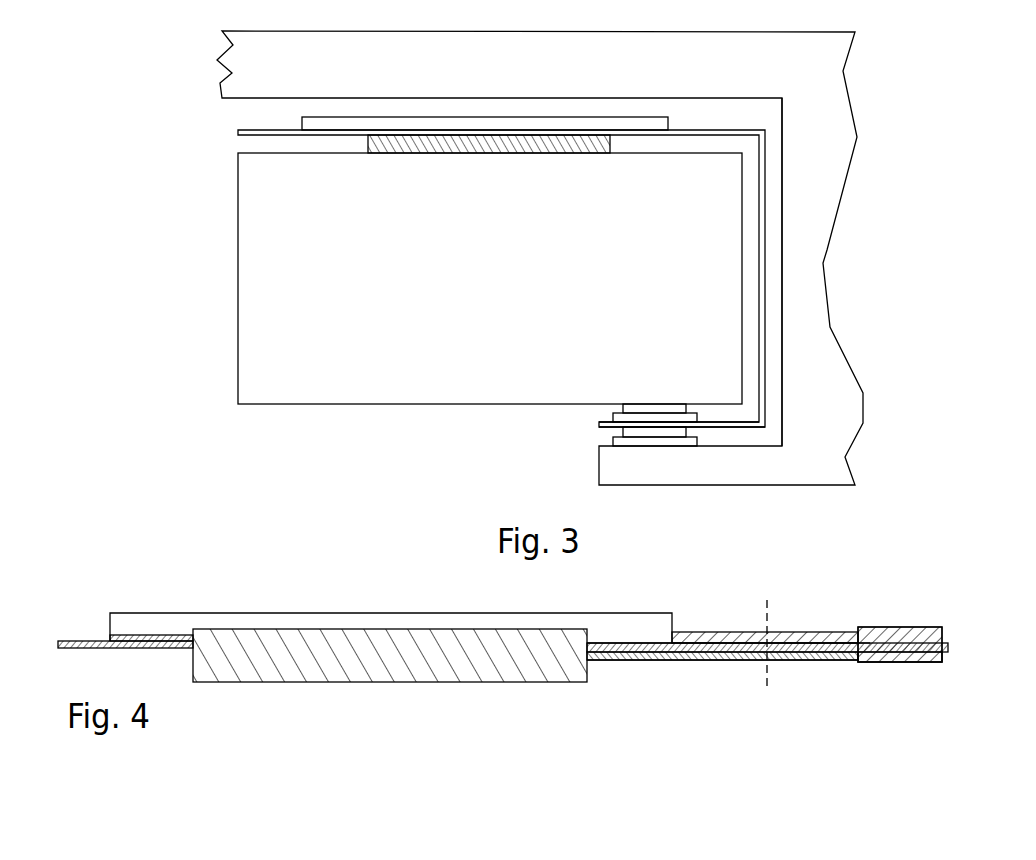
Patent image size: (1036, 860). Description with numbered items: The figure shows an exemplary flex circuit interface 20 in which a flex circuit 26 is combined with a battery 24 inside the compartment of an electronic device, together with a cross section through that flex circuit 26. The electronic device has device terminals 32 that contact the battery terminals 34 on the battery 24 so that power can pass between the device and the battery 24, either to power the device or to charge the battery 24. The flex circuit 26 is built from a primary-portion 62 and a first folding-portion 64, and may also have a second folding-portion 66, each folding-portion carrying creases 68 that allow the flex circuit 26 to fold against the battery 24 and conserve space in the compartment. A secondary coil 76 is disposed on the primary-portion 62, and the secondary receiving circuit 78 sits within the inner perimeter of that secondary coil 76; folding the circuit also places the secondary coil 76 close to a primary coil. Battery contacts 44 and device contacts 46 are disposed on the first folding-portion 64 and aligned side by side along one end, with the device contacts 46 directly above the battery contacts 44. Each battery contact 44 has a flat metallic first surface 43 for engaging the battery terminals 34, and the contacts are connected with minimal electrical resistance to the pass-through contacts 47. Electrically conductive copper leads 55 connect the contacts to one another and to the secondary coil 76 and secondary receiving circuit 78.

In FIG. 3, the flex circuit interface 20 is at (886, 62).
In FIG. 3, the battery 24 is at (318, 404).
In FIG. 3, the flex circuit 26 is at (282, 130).
In FIG. 4, the flex circuit 26 is at (195, 560).
In FIG. 3, the device terminals 32 is at (700, 440).
In FIG. 3, the battery terminals 34 is at (623, 407).
In FIG. 3, the first surface 43 is at (650, 430).
In FIG. 4, the first surface 43 is at (908, 627).
In FIG. 3, the battery contacts 44 is at (613, 416).
In FIG. 4, the battery contacts 44 is at (876, 657).
In FIG. 3, the device contacts 46 is at (690, 428).
In FIG. 4, the device contacts 46 is at (942, 633).
In FIG. 4, the pass-through contacts 47 is at (867, 640).
In FIG. 4, the copper leads 55 is at (710, 633).
In FIG. 4, the primary-portion 62 is at (662, 667).
In FIG. 3, the first folding-portion 64 is at (767, 195).
In FIG. 4, the first folding-portion 64 is at (852, 630).
In FIG. 4, the second folding-portion 66 is at (809, 693).
In FIG. 4, the creases 68 is at (770, 633).
In FIG. 4, the secondary coil 76 is at (203, 613).
In FIG. 3, the secondary receiving circuit 78 is at (553, 117).
In FIG. 4, the secondary receiving circuit 78 is at (332, 682).